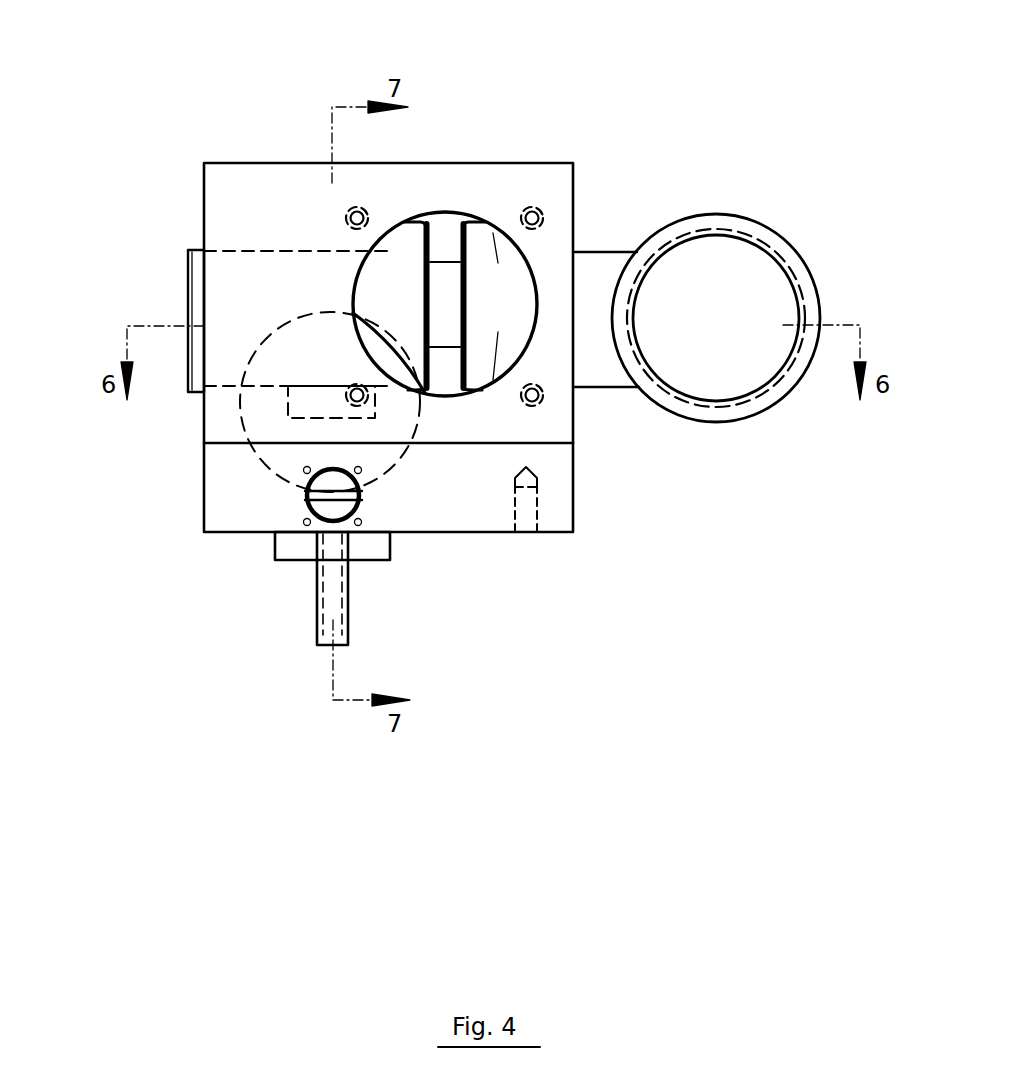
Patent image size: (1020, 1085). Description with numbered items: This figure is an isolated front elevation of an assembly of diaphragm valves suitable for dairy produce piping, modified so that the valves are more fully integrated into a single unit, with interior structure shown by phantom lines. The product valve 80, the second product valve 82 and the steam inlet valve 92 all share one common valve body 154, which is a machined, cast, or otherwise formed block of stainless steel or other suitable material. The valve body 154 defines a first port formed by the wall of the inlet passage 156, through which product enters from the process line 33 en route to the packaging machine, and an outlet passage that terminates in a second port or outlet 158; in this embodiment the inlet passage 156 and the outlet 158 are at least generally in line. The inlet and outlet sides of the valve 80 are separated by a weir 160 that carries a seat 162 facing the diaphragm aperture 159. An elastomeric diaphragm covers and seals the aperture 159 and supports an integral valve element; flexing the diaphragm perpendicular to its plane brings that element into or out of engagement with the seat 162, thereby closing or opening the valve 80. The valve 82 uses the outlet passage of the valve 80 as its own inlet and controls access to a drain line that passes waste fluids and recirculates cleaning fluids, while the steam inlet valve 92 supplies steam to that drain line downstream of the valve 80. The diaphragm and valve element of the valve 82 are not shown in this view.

The valve body 154 is at (457, 163).
The second port or outlet 158 is at (190, 248).
The inlet passage or first passage 156 is at (615, 250).
The process line 33 is at (792, 260).
The product valve 80 is at (594, 379).
The weir 160 is at (463, 250).
The seat 162 is at (445, 313).
The diaphragm aperture 159 is at (498, 332).
The product valve 82 is at (243, 428).
The steam inlet valve 92 is at (305, 502).